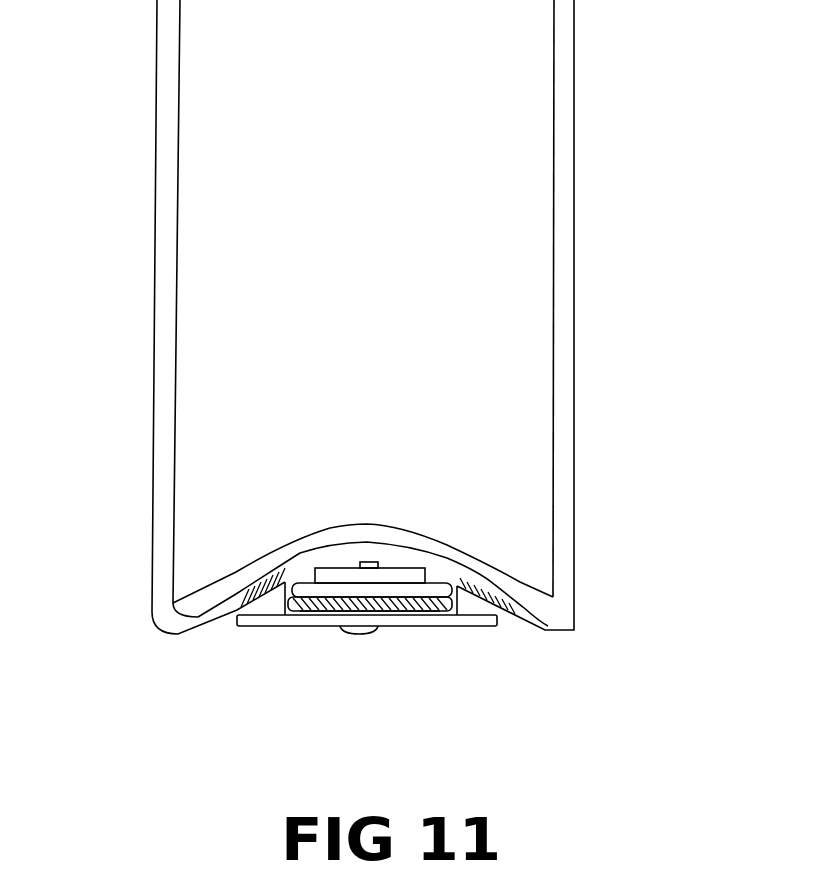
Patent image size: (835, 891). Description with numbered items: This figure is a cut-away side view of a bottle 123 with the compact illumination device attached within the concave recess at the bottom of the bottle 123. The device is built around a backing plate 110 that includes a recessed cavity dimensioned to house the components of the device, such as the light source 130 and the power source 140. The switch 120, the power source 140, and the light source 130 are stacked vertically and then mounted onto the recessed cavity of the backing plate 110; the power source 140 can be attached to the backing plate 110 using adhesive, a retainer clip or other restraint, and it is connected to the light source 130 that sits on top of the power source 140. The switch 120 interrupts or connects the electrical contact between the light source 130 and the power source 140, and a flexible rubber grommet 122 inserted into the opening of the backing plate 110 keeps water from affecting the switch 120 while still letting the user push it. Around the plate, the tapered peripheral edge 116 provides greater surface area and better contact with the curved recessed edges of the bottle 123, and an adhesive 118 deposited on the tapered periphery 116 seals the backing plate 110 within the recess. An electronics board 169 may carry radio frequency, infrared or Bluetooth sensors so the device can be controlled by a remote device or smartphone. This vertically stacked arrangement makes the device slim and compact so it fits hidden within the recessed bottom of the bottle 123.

The backing plate 110 is at (447, 626).
The tapered peripheral edge 116 is at (498, 613).
The adhesive 118 is at (240, 605).
The switch 120 is at (346, 620).
The rubber grommet 122 is at (371, 635).
The bottle 123 is at (609, 92).
The light source 130 is at (383, 563).
The power source 140 is at (449, 584).
The electronics board 169 is at (320, 573).